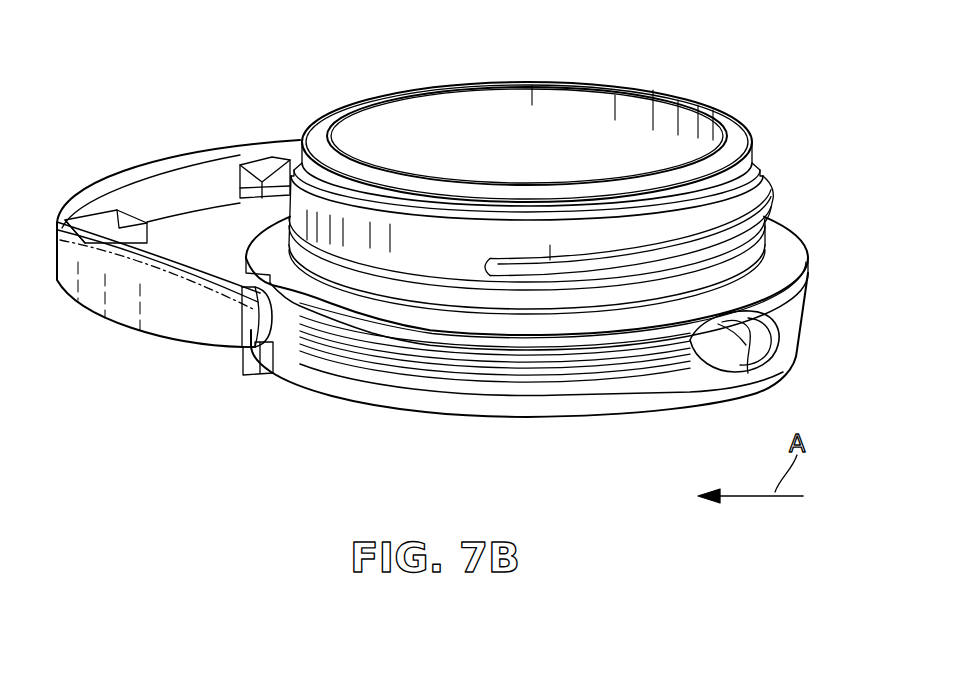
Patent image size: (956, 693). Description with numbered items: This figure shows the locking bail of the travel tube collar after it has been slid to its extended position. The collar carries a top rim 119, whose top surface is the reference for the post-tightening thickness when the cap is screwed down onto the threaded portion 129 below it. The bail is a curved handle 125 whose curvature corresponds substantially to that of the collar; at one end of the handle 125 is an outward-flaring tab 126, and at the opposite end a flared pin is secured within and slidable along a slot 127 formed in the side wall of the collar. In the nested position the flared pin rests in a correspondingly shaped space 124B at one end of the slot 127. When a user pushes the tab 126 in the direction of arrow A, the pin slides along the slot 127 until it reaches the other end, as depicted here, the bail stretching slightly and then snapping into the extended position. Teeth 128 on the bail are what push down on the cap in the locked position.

The top rim 119 is at (710, 110).
The correspondingly shaped space 124B is at (744, 322).
The handle 125 is at (174, 221).
The tab 126 is at (210, 330).
The slot 127 is at (408, 342).
The ring end 128 is at (87, 203).
The threaded portion 129 is at (750, 203).